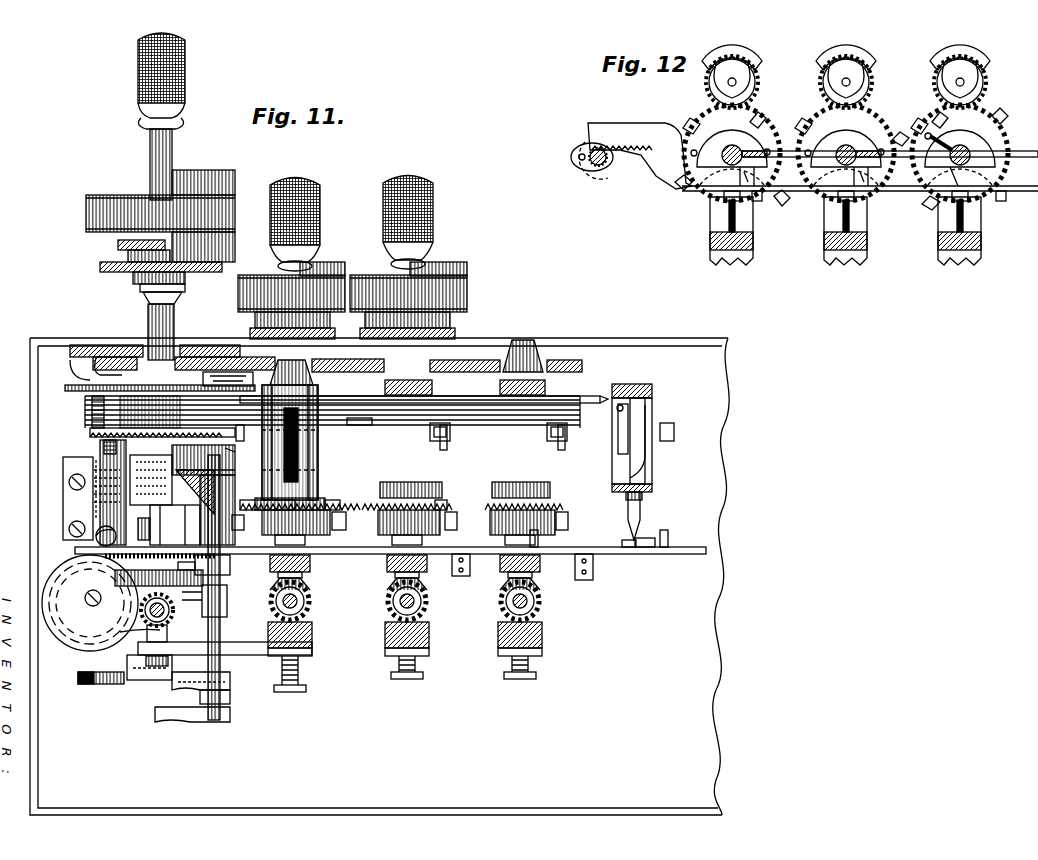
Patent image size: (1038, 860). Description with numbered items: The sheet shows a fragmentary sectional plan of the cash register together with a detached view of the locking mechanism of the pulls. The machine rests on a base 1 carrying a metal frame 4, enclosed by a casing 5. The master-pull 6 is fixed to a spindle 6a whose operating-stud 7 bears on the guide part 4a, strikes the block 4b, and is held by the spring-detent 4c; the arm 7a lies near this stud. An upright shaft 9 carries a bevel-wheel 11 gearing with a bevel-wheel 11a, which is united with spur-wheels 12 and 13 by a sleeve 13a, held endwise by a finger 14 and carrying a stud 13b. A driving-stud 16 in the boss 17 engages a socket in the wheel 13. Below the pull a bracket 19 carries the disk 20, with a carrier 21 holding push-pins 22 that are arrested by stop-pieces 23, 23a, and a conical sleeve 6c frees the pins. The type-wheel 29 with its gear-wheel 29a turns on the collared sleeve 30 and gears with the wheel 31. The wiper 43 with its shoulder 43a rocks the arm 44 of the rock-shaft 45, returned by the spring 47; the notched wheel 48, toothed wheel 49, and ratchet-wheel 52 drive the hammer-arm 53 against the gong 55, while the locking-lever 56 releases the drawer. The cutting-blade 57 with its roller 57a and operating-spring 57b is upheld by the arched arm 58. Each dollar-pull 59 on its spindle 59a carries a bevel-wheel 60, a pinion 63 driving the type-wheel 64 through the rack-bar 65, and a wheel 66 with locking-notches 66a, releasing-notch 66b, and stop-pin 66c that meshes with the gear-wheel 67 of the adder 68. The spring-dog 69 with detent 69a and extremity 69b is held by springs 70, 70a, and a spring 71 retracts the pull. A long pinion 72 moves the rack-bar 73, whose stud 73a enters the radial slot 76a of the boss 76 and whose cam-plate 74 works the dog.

In FIG. 11, the base 1 is at (709, 693).
In FIG. 11, the frame 4 is at (100, 500).
In FIG. 12, the frame 4 is at (710, 250).
In FIG. 11, the guide part 4a is at (63, 536).
In FIG. 11, the block 4b is at (63, 500).
In FIG. 11, the spring-detent 4c is at (214, 495).
In FIG. 11, the casing 5 is at (212, 346).
In FIG. 11, the master-pull 6 is at (137, 62).
In FIG. 11, the spindle 6a is at (149, 155).
In FIG. 12, the spindle 6a is at (604, 164).
In FIG. 11, the conical sleeve 6c is at (180, 290).
In FIG. 11, the operating-stud 7 is at (240, 446).
In FIG. 11, the slide block arm 7a is at (250, 460).
In FIG. 11, the upright shaft 9 is at (176, 622).
In FIG. 11, the bevel-wheel 11 is at (176, 624).
In FIG. 11, the bevel-wheel 11a is at (140, 610).
In FIG. 11, the spur-wheel 12 is at (115, 579).
In FIG. 11, the spur-wheel 13 is at (160, 547).
In FIG. 11, the sleeve 13a is at (138, 632).
In FIG. 11, the stud 13b is at (168, 660).
In FIG. 11, the finger 14 is at (223, 562).
In FIG. 11, the driving-stud 16 is at (150, 522).
In FIG. 12, the driving-stud 16 is at (580, 162).
In FIG. 11, the boss 17 is at (142, 490).
In FIG. 12, the boss 17 is at (580, 150).
In FIG. 11, the bracket 19 is at (133, 279).
In FIG. 11, the disk 20 is at (118, 247).
In FIG. 11, the carrier 21 is at (232, 215).
In FIG. 11, the push-pins 22 is at (232, 190).
In FIG. 11, the stop-piece 23 is at (140, 295).
In FIG. 11, the stop-piece 23a is at (128, 256).
In FIG. 11, the type-wheel 29 is at (90, 434).
In FIG. 11, the gear-wheel 29a is at (104, 453).
In FIG. 11, the collared sleeve 30 is at (232, 460).
In FIG. 11, the wheel 31 is at (246, 430).
In FIG. 11, the wiper 43 is at (137, 659).
In FIG. 11, the shoulder 43a is at (127, 662).
In FIG. 11, the arm 44 is at (182, 724).
In FIG. 11, the rock-shaft 45 is at (222, 622).
In FIG. 11, the spring 47 is at (227, 598).
In FIG. 11, the notched wheel 48 is at (86, 476).
In FIG. 11, the toothed wheel 49 is at (94, 490).
In FIG. 11, the ratchet-wheel 52 is at (68, 462).
In FIG. 11, the hammer-arm 53 is at (96, 549).
In FIG. 11, the gong 55 is at (46, 580).
In FIG. 11, the locking-lever 56 is at (150, 683).
In FIG. 11, the cutting-blade 57 is at (65, 390).
In FIG. 11, the antifriction-roller 57a is at (80, 373).
In FIG. 11, the operating-spring 57b is at (98, 346).
In FIG. 11, the arched arm 58 is at (207, 362).
In FIG. 11, the dollar-pull 59 is at (322, 208).
In FIG. 11, the spindle 59a is at (285, 267).
In FIG. 12, the spindle 59a is at (870, 146).
In FIG. 11, the bevel-wheel 60 is at (312, 594).
In FIG. 11, the pinion 63 is at (452, 430).
In FIG. 11, the type-wheel 64 is at (92, 398).
In FIG. 11, the rack-bar 65 is at (372, 402).
In FIG. 11, the wheel 66 is at (328, 506).
In FIG. 12, the wheel 66 is at (752, 112).
In FIG. 11, the locking-notches 66a is at (358, 512).
In FIG. 12, the locking-notches 66a is at (692, 190).
In FIG. 12, the releasing-notch 66b is at (1008, 104).
In FIG. 11, the stop-pin 66c is at (240, 520).
In FIG. 12, the stop-pin 66c is at (884, 112).
In FIG. 11, the gear-wheel 67 is at (328, 500).
In FIG. 12, the gear-wheel 67 is at (758, 68).
In FIG. 11, the adder 68 is at (320, 476).
In FIG. 12, the adder 68 is at (750, 54).
In FIG. 11, the spring-dog 69 is at (641, 522).
In FIG. 11, the detent 69a is at (642, 506).
In FIG. 12, the detent 69a is at (728, 214).
In FIG. 11, the extremity 69b is at (628, 540).
In FIG. 12, the extremity 69b is at (955, 176).
In FIG. 11, the spring 70 is at (618, 432).
In FIG. 11, the spring 70a is at (450, 452).
In FIG. 11, the spring 71 is at (306, 660).
In FIG. 11, the pinion 72 is at (144, 526).
In FIG. 12, the pinion 72 is at (594, 175).
In FIG. 11, the rack-bar 73 is at (175, 554).
In FIG. 12, the rack-bar 73 is at (636, 122).
In FIG. 11, the stud 73a is at (530, 536).
In FIG. 12, the stud 73a is at (762, 202).
In FIG. 11, the cam-plate 74 is at (645, 548).
In FIG. 12, the cam-plate 74 is at (807, 176).
In FIG. 11, the boss 76 is at (222, 472).
In FIG. 12, the boss 76 is at (700, 120).
In FIG. 12, the radial slot 76a is at (832, 145).